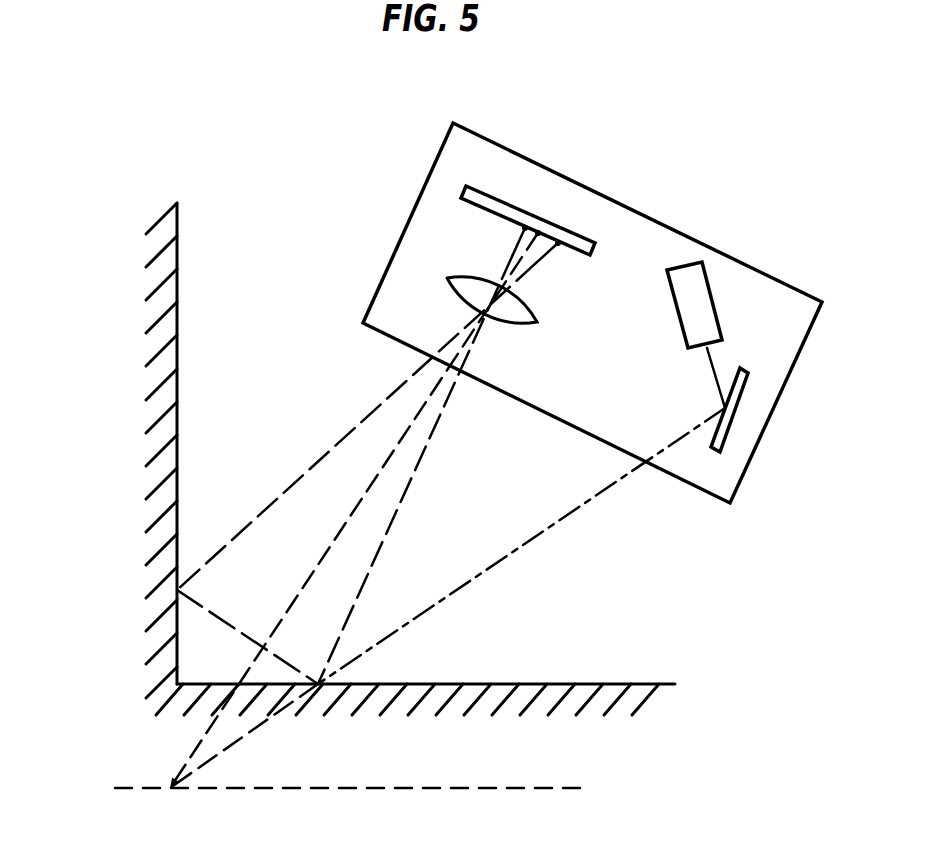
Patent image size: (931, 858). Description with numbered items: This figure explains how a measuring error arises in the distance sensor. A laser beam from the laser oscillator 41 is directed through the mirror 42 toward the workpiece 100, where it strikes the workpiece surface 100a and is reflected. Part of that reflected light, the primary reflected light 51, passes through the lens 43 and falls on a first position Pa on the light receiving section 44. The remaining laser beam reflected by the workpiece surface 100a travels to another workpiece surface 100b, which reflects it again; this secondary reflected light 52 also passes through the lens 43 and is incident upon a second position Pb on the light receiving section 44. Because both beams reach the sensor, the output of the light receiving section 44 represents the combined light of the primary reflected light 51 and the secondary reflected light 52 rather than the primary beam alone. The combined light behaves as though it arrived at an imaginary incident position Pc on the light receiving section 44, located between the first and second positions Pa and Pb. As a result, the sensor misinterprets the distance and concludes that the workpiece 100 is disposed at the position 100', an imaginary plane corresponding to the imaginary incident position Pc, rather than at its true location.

The laser oscillator 41 is at (717, 305).
The mirror 42 is at (743, 397).
The lens 43 is at (515, 324).
The light receiving section 44 is at (480, 208).
The primary reflected light 51 is at (398, 532).
The secondary reflected light 52 is at (292, 473).
The workpiece 100 is at (357, 459).
The workpiece surface 100a is at (507, 685).
The another workpiece surface 100b is at (177, 512).
The misunderstood workpiece position 100' is at (352, 808).
The first position Pa is at (525, 228).
The second position Pb is at (558, 243).
The imaginary incident position Pc is at (538, 233).